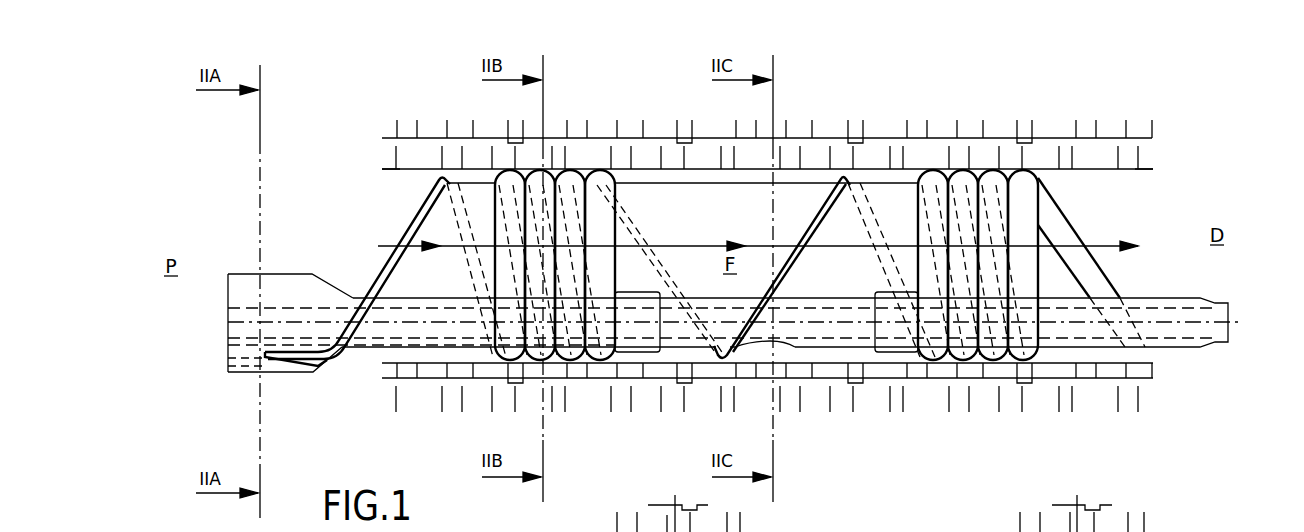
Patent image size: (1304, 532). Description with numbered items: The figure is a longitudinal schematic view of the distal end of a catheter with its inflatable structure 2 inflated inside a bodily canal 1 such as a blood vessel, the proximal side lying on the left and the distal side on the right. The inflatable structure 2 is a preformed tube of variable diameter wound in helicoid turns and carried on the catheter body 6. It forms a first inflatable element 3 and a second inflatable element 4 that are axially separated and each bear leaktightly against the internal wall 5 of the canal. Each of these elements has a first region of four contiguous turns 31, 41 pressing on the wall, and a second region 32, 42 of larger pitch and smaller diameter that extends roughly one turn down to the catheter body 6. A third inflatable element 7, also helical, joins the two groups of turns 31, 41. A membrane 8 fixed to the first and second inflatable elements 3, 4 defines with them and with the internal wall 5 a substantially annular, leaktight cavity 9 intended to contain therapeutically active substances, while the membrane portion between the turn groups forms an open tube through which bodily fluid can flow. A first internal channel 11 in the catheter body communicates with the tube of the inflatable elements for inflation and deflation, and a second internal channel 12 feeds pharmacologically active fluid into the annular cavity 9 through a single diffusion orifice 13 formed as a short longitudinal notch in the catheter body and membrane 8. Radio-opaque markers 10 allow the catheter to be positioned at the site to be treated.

The bodily canal 1 is at (878, 133).
The inflatable structure 2 is at (576, 130).
The first inflatable element 3 is at (333, 194).
The second inflatable element 4 is at (1102, 215).
The internal wall 5 is at (418, 172).
The catheter body 6 is at (296, 290).
The third inflatable element 7 is at (806, 228).
The membrane 8 is at (672, 184).
The annular cavity 9 is at (683, 180).
The radio-opaque markers 10 is at (638, 352).
The first internal channel 11 is at (228, 362).
The second internal channel 12 is at (228, 346).
The diffusion orifice 13 is at (772, 346).
The contiguous turns of the first inflatable element 31 is at (600, 361).
The second region of the first inflatable element 32 is at (383, 264).
The contiguous turns of the second inflatable element 41 is at (1022, 361).
The second region of the second inflatable element 42 is at (1108, 286).